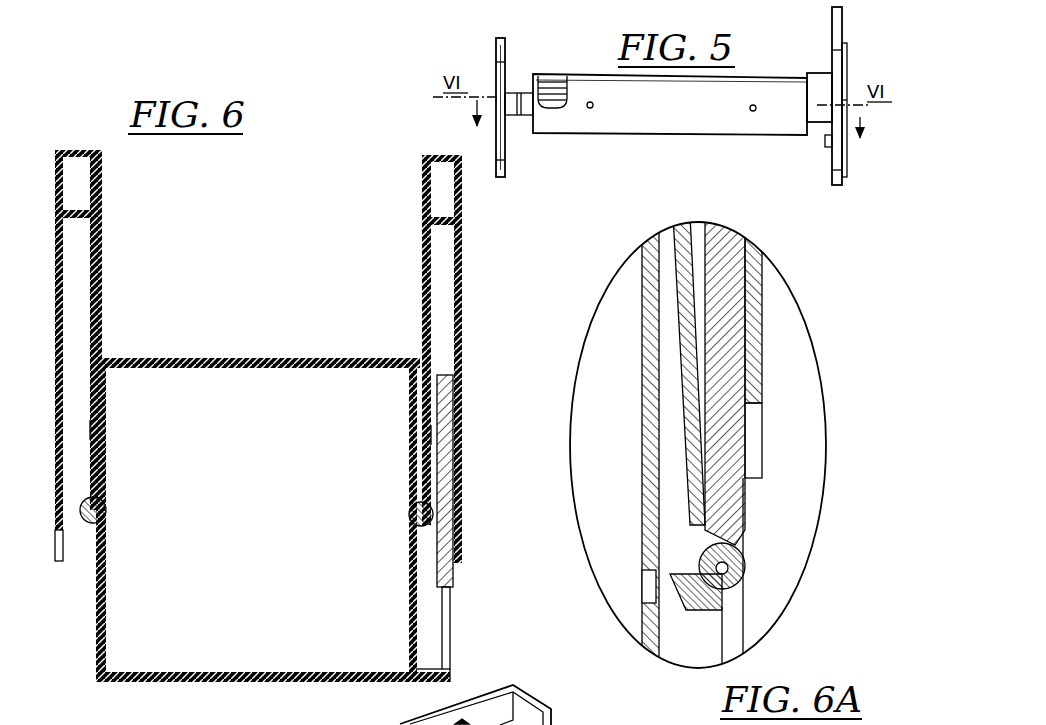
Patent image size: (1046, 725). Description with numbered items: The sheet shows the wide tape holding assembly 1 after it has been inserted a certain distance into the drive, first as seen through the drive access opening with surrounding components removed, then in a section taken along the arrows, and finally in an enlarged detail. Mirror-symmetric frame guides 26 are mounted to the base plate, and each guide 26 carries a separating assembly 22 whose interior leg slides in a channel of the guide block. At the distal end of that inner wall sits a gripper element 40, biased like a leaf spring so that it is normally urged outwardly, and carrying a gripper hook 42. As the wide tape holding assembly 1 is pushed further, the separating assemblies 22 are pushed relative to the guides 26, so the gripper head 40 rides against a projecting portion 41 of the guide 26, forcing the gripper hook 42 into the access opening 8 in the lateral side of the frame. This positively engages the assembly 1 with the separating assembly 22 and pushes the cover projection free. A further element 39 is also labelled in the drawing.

In FIG. 5, the wide tape holding assembly 1 is at (597, 68).
In FIG. 6, the wide tape holding assembly 1 is at (256, 345).
In FIG. 6A, the wide tape holding assembly 1 is at (642, 347).
In FIG. 6A, the access opening 8 is at (645, 585).
In FIG. 5, the separating assembly 22 is at (492, 32).
In FIG. 6, the separating assembly 22 is at (110, 188).
In FIG. 6A, the separating assembly 22 is at (760, 334).
In FIG. 5, the frame guide 26 is at (823, 58).
In FIG. 6, the frame guide 26 is at (448, 613).
In FIG. 6, the guide bar 39 is at (100, 440).
In FIG. 6, the gripper element 40 is at (92, 527).
In FIG. 6A, the gripper element 40 is at (740, 597).
In FIG. 6, the projecting portion 41 is at (446, 585).
In FIG. 6A, the projecting portion 41 is at (745, 511).
In FIG. 6A, the gripper hook 42 is at (684, 602).